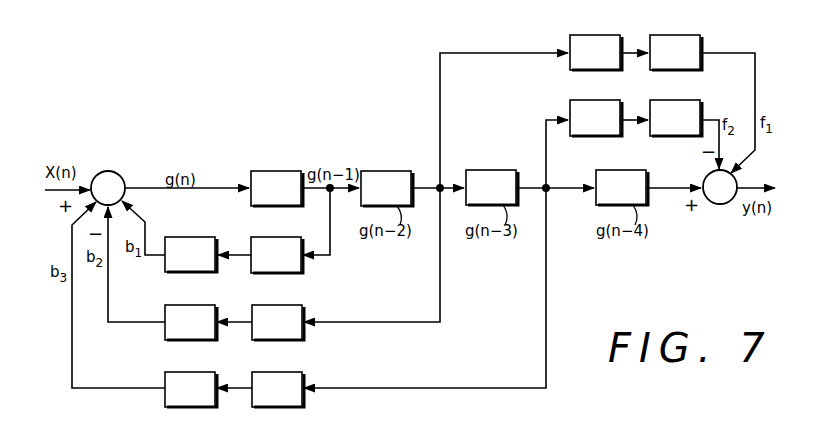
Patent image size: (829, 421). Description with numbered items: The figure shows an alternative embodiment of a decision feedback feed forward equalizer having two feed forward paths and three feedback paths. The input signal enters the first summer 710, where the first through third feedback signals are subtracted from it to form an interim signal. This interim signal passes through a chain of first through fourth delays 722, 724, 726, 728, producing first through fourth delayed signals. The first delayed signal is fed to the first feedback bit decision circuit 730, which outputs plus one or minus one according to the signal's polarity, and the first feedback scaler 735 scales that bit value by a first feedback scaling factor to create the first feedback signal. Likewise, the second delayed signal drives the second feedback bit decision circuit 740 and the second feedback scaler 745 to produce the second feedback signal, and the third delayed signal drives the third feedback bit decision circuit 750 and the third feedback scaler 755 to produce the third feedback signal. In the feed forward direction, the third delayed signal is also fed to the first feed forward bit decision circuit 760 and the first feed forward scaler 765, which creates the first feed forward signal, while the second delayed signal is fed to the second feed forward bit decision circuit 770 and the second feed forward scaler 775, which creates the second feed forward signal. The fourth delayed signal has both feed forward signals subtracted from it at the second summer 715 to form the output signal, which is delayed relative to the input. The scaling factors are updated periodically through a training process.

The first summer 710 is at (118, 173).
The second summer 715 is at (722, 204).
The first delay 722 is at (268, 160).
The second delay 724 is at (380, 171).
The third delay 726 is at (488, 170).
The fourth delay 728 is at (625, 170).
The first feedback bit decision circuit 730 is at (274, 237).
The first feedback scaler 735 is at (193, 237).
The second feedback bit decision circuit 740 is at (280, 305).
The second feedback scaler 745 is at (199, 305).
The third feedback bit decision circuit 750 is at (280, 372).
The third feedback scaler 755 is at (199, 372).
The first feed forward bit decision circuit 760 is at (586, 100).
The first feed forward scaler 765 is at (684, 100).
The second feed forward bit decision circuit 770 is at (586, 35).
The second feed forward scaler 775 is at (684, 35).